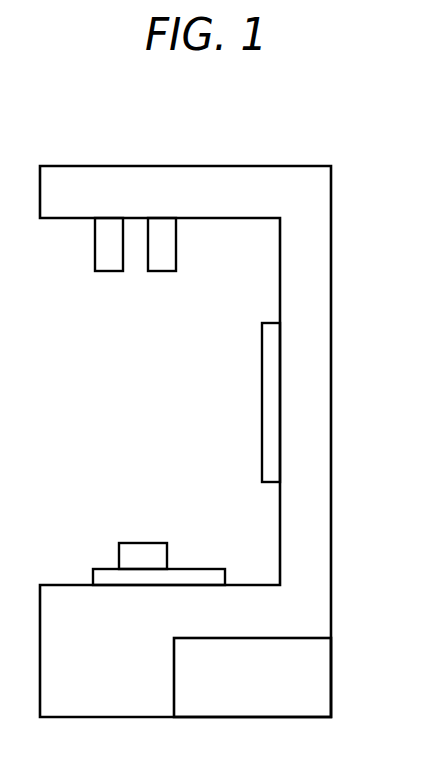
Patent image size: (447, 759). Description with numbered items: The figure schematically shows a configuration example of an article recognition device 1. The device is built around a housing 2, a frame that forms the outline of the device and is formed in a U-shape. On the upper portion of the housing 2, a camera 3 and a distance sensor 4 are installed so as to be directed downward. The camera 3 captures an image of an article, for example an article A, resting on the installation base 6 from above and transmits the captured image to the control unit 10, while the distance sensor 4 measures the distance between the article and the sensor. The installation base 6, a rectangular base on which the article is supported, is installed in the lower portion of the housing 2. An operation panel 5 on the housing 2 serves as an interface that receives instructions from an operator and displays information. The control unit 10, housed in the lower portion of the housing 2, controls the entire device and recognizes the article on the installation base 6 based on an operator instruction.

The article recognition device 1 is at (221, 138).
The housing 2 is at (331, 331).
The camera 3 is at (108, 272).
The distance sensor 4 is at (159, 272).
The operation panel 5 is at (262, 380).
The installation base 6 is at (93, 580).
The article A is at (145, 543).
The control unit 10 is at (174, 660).